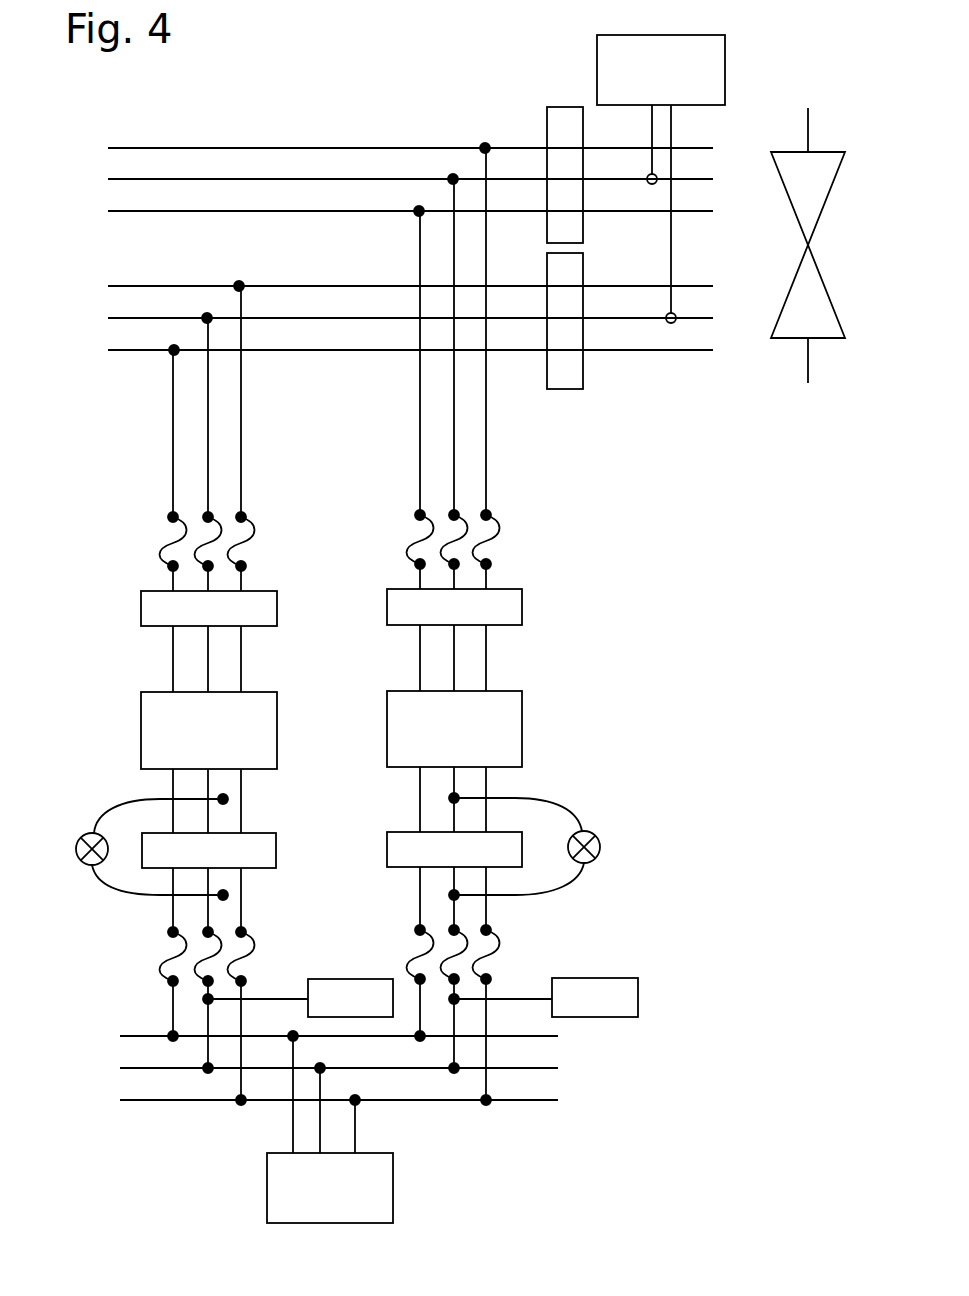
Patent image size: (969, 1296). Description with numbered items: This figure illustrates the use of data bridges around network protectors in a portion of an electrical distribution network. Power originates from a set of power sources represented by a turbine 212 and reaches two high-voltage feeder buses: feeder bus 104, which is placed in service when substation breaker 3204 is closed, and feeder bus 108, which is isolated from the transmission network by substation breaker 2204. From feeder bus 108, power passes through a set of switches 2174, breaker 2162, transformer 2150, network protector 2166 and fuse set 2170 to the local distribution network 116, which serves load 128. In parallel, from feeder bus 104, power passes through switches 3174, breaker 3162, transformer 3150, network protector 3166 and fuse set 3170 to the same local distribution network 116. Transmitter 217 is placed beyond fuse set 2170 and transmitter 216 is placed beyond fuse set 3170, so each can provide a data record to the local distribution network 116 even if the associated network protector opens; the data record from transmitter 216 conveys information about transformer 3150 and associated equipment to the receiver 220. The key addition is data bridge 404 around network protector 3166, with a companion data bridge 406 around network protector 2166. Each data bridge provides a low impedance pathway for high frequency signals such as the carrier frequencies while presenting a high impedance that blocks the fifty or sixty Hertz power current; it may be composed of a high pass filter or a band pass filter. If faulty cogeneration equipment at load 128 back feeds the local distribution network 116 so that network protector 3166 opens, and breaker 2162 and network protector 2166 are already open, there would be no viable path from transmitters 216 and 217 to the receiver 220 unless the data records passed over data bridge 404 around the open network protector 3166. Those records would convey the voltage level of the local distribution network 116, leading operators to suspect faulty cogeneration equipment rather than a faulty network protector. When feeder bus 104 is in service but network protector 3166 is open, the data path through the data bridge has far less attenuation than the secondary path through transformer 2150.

The feeder bus 104 is at (98, 147).
The feeder bus 108 is at (98, 285).
The local distribution network 116 is at (110, 1030).
The receiver 220 is at (661, 179).
The substation breaker 3204 is at (559, 115).
The substation breaker 2204 is at (562, 389).
The turbine 212 is at (848, 383).
The load 128 is at (330, 1129).
The input switches 2174 is at (131, 510).
The input switches 3174 is at (535, 510).
The fuse set 2170 is at (131, 920).
The fuse set 3170 is at (535, 915).
The breaker 2162 is at (209, 608).
The filter 3162 is at (454, 607).
The transformer 2150 is at (209, 730).
The transformer 3150 is at (454, 729).
The network protector 2166 is at (209, 850).
The network protector 3166 is at (454, 849).
The transmitter 217 is at (303, 998).
The transmitter 216 is at (548, 997).
The indicator lamp 406 is at (124, 847).
The data bridge 404 is at (554, 846).